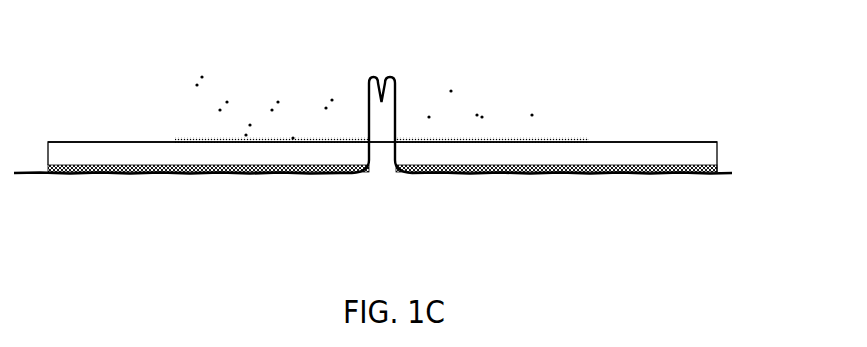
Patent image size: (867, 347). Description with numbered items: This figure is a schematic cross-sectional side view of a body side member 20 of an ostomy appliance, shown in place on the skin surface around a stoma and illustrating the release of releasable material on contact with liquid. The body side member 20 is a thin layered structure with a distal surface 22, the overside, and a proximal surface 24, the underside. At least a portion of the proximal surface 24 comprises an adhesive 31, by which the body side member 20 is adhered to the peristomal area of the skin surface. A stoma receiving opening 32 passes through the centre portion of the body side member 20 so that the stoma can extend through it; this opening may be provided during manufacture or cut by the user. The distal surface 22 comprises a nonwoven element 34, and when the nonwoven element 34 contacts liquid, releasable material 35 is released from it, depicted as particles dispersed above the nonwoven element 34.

The body side member 20 is at (710, 157).
The distal surface 22 is at (657, 141).
The proximal surface 24 is at (684, 167).
The adhesive 31 is at (556, 176).
The stoma receiving opening 32 is at (399, 129).
The nonwoven element 34 is at (520, 134).
The releasable material 35 is at (204, 72).